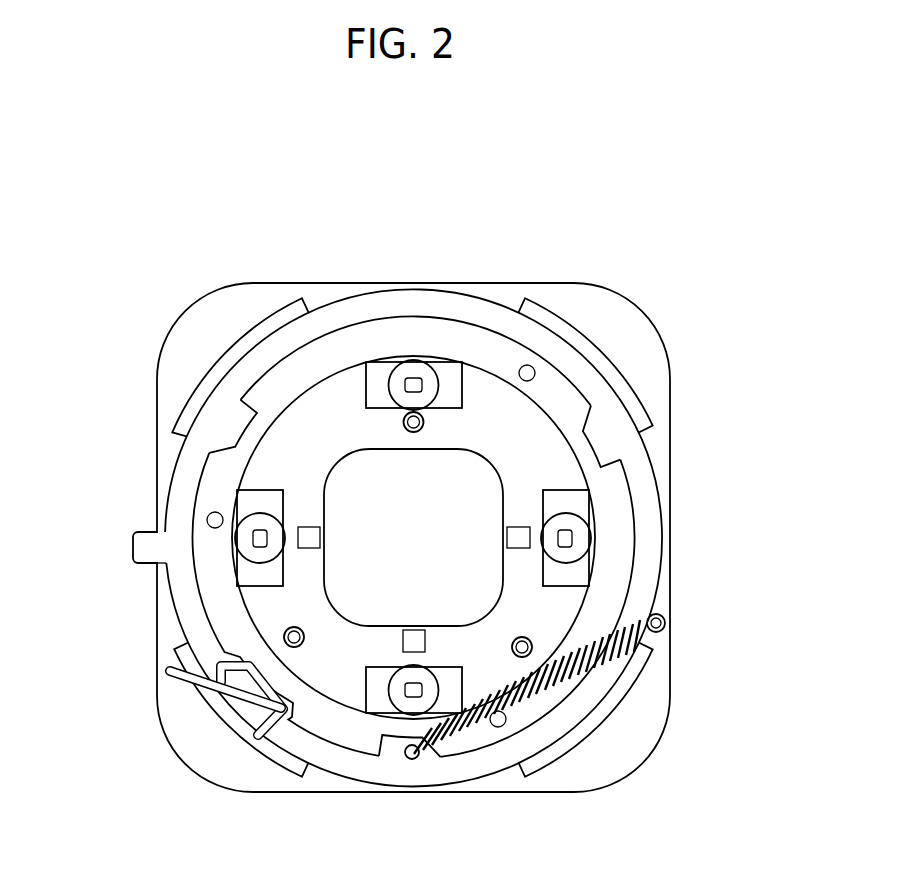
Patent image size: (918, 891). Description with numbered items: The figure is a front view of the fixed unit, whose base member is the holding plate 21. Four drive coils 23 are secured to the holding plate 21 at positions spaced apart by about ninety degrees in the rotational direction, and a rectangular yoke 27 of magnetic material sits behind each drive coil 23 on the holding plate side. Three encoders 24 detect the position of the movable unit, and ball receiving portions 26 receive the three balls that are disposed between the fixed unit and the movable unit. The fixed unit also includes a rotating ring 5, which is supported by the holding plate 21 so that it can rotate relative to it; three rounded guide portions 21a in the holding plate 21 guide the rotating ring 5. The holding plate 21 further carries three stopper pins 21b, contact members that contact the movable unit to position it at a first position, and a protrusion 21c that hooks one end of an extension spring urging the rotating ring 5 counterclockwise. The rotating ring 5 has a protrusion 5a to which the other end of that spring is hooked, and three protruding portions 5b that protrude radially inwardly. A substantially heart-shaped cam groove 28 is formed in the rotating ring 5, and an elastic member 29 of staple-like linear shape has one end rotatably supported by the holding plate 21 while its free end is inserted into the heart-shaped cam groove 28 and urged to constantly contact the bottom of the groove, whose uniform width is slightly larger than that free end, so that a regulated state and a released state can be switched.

The holding plate 21 is at (607, 312).
The rounded guide portions 21a is at (232, 360).
The stopper pins 21b is at (528, 366).
The protrusion 21c is at (665, 623).
The rotating ring 5 is at (606, 410).
The protrusion 5a is at (414, 760).
The protruding portions 5b is at (235, 425).
The drive coils 23 is at (257, 517).
The encoders 24 is at (300, 542).
The ball receiving portions 26 is at (406, 414).
The yoke 27 is at (263, 493).
The heart-shaped cam groove 28 is at (240, 718).
The elastic member 29 is at (170, 674).